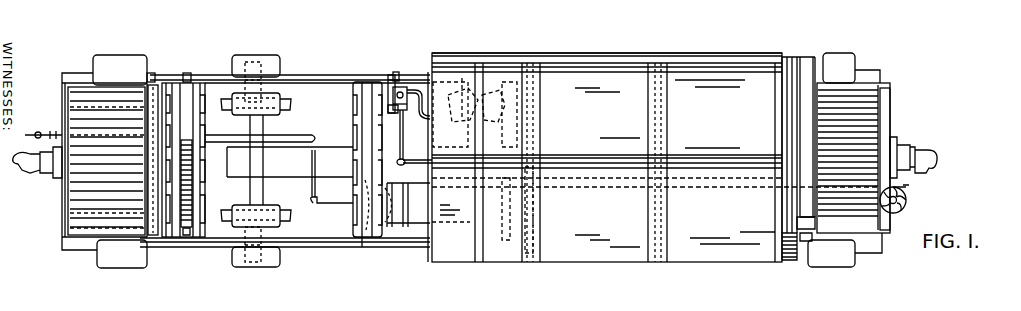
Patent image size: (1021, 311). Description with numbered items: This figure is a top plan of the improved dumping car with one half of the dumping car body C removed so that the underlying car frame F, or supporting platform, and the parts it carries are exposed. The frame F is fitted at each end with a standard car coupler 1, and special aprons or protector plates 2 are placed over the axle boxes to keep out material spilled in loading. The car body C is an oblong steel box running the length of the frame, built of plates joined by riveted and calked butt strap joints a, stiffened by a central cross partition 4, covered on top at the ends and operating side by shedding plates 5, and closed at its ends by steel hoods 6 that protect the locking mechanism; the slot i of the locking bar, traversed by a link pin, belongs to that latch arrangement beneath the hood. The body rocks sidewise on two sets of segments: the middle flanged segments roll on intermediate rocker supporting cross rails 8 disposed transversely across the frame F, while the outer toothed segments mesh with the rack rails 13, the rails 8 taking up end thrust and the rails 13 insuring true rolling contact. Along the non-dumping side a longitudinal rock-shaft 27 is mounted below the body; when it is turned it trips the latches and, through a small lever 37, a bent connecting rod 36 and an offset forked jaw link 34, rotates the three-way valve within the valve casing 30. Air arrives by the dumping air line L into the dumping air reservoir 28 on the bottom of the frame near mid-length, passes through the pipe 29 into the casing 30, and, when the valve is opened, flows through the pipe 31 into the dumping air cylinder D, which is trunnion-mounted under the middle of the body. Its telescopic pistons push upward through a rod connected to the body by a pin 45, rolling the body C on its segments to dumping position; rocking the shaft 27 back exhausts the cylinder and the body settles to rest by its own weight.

The car coupler 1 is at (27, 172).
The apron or protector plate 2 is at (118, 65).
The central cross partition 4 is at (479, 258).
The shedding plate 5 is at (697, 53).
The hood 6 is at (806, 65).
The rocker supporting cross rail 8 is at (363, 97).
The rack rail 13 is at (185, 97).
The rock-shaft 27 is at (322, 75).
The dumping air reservoir 28 is at (427, 230).
The pipe 29 is at (418, 158).
The valve casing 30 is at (403, 80).
The pipe 31 is at (420, 86).
The offset forked jaw link 34 is at (393, 104).
The bent connecting rod 36 is at (376, 63).
The small lever 37 is at (393, 72).
The pin 45 is at (367, 240).
The slot i is at (193, 228).
The air dumping line L is at (297, 134).
The car frame F is at (320, 247).
The dumping air cylinder D is at (465, 77).
The dumping car body C is at (710, 247).
The butt strap joint a is at (663, 123).